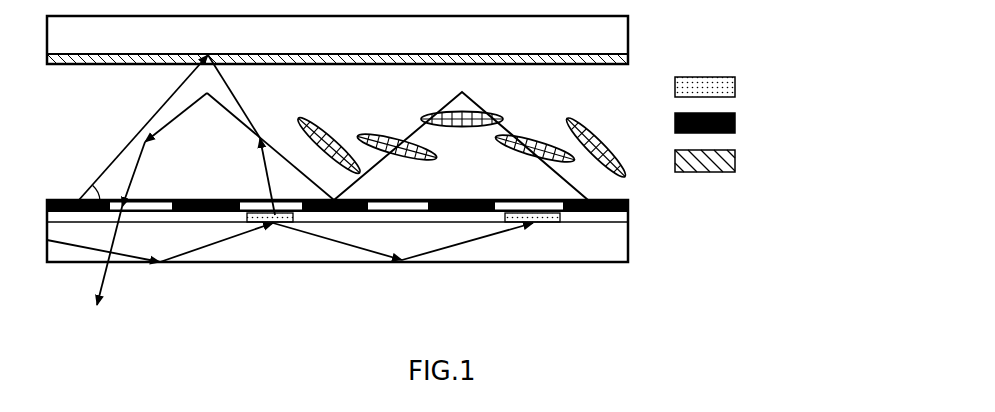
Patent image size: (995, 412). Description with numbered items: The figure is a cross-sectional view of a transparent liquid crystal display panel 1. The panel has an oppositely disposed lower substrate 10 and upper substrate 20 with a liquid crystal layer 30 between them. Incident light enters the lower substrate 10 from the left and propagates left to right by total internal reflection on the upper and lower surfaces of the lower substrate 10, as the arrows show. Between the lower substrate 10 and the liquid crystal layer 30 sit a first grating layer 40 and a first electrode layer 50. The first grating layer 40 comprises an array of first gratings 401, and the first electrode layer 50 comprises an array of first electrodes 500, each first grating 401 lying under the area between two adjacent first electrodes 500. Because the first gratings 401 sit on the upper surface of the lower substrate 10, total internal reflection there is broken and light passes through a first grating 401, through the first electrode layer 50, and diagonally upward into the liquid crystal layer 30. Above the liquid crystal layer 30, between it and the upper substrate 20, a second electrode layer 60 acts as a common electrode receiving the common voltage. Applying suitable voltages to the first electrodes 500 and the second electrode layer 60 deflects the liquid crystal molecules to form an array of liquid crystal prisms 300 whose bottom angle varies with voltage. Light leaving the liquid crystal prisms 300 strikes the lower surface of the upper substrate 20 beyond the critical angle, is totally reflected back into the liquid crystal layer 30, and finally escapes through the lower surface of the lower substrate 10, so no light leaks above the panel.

The transparent liquid crystal display panel 1 is at (448, 152).
The lower substrate 10 is at (337, 231).
The upper substrate 20 is at (337, 40).
The liquid crystal layer 30 is at (461, 144).
The first grating layer 40 is at (613, 207).
The first electrode layer 50 is at (738, 205).
The second electrode layer 60 is at (457, 114).
The liquid crystal prism 300 is at (206, 180).
The first grating 401 is at (519, 149).
The first electrode 500 is at (419, 162).